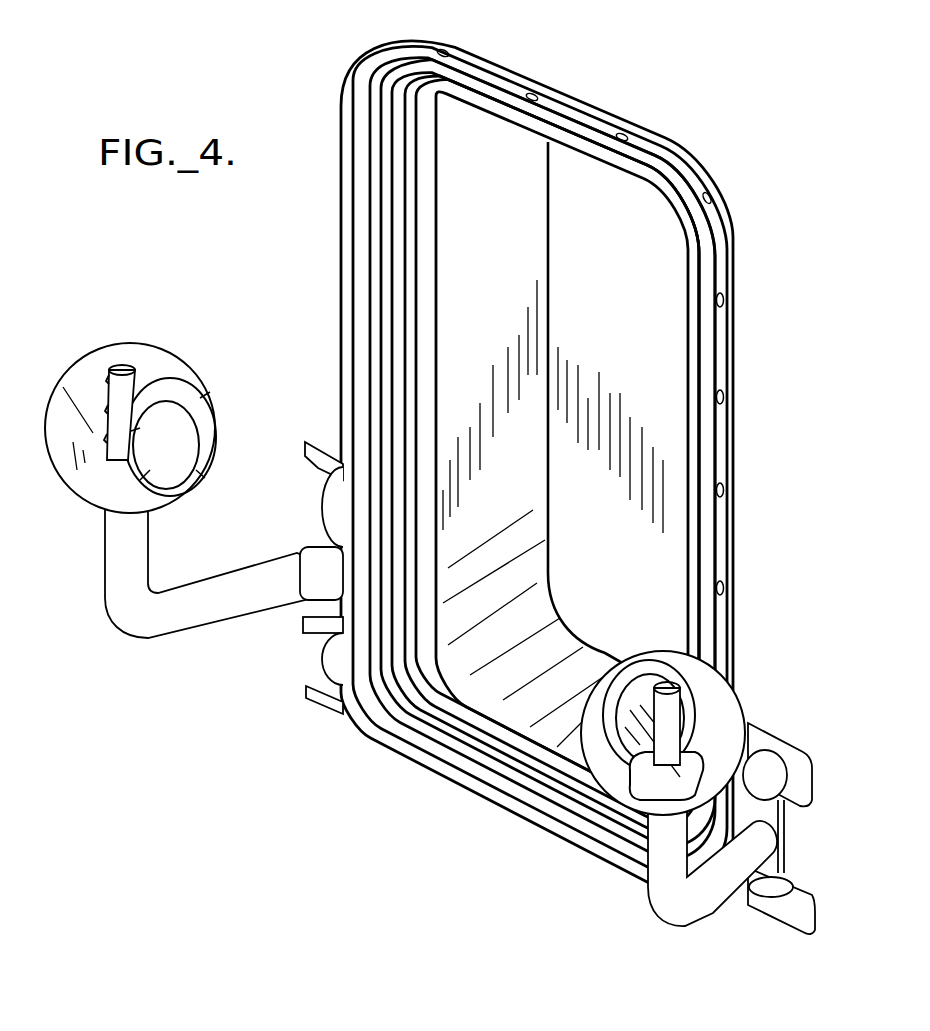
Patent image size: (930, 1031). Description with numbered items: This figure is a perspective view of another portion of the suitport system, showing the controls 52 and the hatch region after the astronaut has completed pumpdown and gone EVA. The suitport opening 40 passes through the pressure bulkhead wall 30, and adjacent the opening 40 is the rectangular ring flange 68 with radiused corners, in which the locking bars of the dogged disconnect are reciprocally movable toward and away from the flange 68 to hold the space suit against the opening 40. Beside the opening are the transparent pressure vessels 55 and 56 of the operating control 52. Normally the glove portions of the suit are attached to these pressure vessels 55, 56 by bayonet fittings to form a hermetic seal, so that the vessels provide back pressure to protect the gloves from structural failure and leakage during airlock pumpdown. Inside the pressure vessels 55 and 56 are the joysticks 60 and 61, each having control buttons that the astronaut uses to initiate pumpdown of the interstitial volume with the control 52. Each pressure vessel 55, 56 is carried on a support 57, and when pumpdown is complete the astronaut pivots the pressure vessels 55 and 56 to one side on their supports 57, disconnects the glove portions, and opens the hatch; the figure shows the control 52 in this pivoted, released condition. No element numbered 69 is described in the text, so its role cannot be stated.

The pressure bulkhead wall 30 is at (499, 447).
The suitport opening 40 is at (424, 333).
The operating control 52 is at (113, 631).
The transparent pressure vessel 55 is at (720, 703).
The transparent pressure vessel 56 is at (89, 360).
The support 57 is at (194, 612).
The joystick 60 is at (672, 708).
The joystick 61 is at (128, 368).
The rectangular ring flange 68 is at (587, 140).
The holes 69 is at (534, 95).